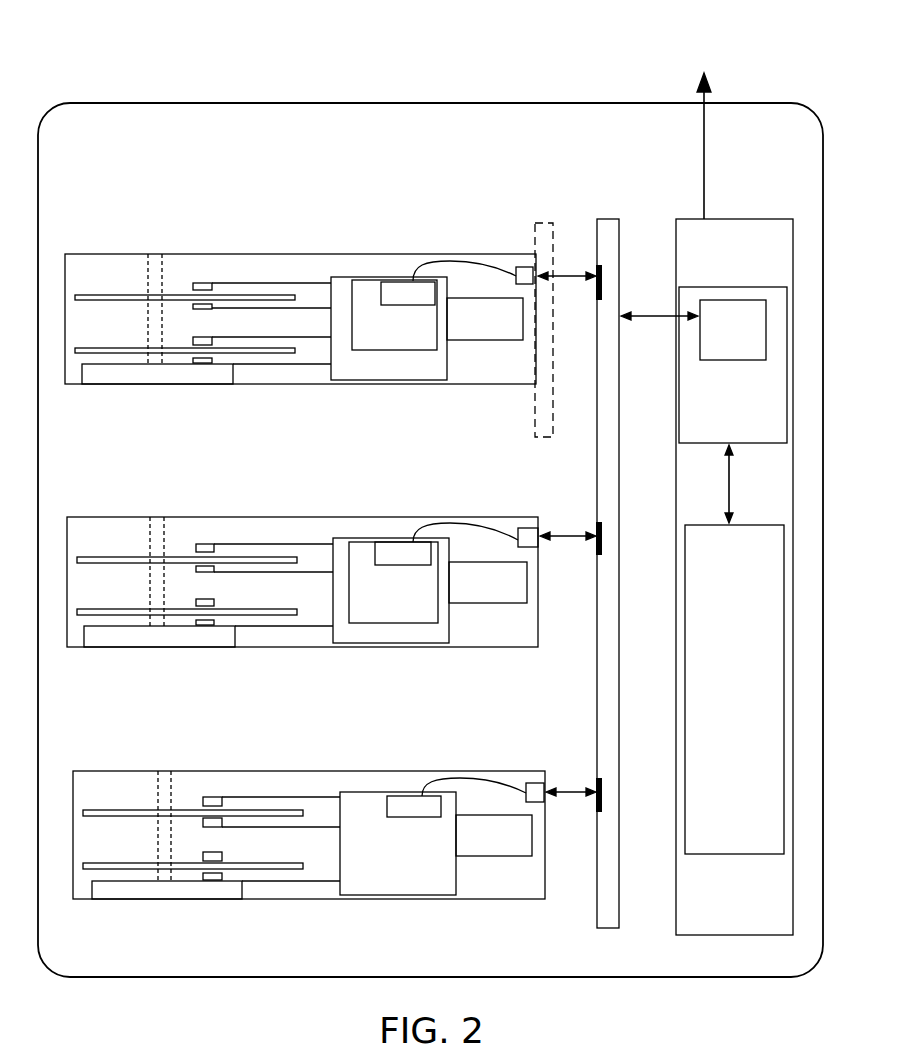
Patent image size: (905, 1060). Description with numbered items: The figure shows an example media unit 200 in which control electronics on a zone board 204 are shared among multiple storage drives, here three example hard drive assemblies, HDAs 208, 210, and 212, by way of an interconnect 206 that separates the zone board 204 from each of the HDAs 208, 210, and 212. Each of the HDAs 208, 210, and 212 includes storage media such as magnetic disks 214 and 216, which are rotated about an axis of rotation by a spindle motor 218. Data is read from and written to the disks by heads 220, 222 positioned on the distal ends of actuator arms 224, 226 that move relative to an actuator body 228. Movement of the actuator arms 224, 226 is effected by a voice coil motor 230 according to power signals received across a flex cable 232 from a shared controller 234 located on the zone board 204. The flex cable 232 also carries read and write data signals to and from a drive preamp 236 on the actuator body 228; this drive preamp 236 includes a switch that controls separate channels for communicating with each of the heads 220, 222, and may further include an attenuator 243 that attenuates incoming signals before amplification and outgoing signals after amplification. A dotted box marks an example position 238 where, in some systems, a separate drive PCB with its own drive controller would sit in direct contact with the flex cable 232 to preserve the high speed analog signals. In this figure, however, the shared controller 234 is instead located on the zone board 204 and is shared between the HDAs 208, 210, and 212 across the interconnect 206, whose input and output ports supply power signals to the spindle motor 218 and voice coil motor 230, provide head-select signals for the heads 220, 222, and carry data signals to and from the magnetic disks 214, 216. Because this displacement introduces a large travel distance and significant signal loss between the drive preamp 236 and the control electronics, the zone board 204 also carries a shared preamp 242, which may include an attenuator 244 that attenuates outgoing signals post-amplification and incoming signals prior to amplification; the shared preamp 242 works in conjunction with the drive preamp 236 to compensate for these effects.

The media unit 200 is at (112, 140).
The zone board 204 is at (737, 219).
The interconnect 206 is at (609, 219).
The HDA 208 is at (132, 254).
The HDA 210 is at (132, 517).
The HDA 212 is at (145, 771).
The magnetic disk 214 is at (135, 295).
The magnetic disk 216 is at (143, 348).
The spindle motor 218 is at (175, 384).
The head 220 is at (203, 287).
The head 222 is at (210, 308).
The actuator arm 224 is at (265, 283).
The actuator arm 226 is at (303, 308).
The actuator body 228 is at (372, 378).
The voice coil motor 230 is at (485, 319).
The flex cable 232 is at (487, 269).
The shared controller 234 is at (720, 733).
The drive preamp 236 is at (383, 348).
The example position 238 is at (535, 407).
The shared preamp 242 is at (718, 418).
The attenuator 243 is at (408, 293).
The attenuator 244 is at (718, 351).